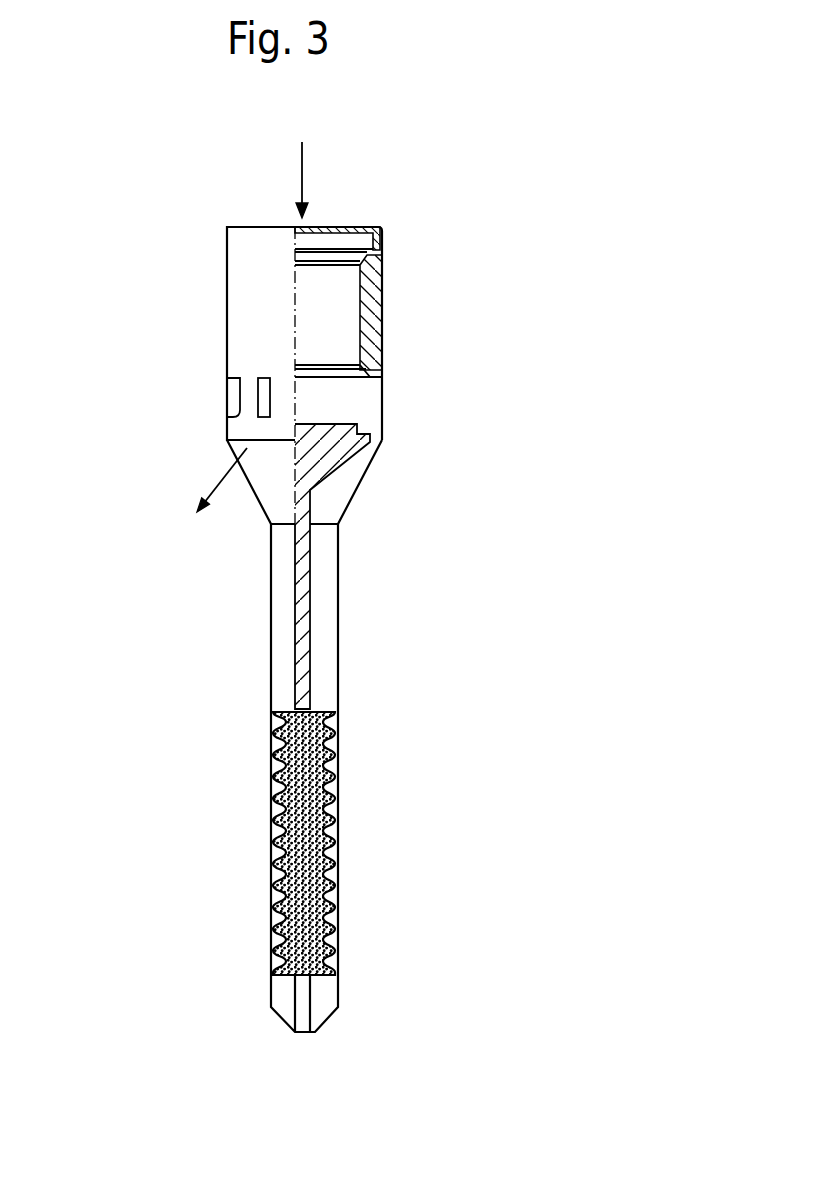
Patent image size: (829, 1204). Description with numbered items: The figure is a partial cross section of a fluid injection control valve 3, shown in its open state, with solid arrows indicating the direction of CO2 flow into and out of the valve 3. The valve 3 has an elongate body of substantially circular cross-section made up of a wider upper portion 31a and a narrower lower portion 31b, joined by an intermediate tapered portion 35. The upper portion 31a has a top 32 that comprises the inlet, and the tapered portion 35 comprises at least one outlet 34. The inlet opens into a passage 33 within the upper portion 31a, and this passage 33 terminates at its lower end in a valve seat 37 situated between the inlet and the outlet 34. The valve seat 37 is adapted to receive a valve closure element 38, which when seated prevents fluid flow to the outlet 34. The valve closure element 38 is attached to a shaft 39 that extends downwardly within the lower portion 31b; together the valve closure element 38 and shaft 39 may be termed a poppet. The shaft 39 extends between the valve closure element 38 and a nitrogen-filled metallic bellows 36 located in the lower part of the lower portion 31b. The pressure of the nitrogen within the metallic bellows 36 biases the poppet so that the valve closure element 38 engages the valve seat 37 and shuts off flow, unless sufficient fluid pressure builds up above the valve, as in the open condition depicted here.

The fluid injection control valve 3 is at (213, 270).
The upper portion 31a is at (258, 310).
The lower portion 31b is at (270, 643).
The top 32 is at (340, 226).
The passage 33 is at (322, 312).
The outlet 34 is at (233, 397).
The tapered portion 35 is at (357, 493).
The nitrogen-filled metallic bellows 36 is at (303, 865).
The valve seat 37 is at (333, 373).
The valve closure element 38 is at (332, 447).
The shaft 39 is at (310, 620).